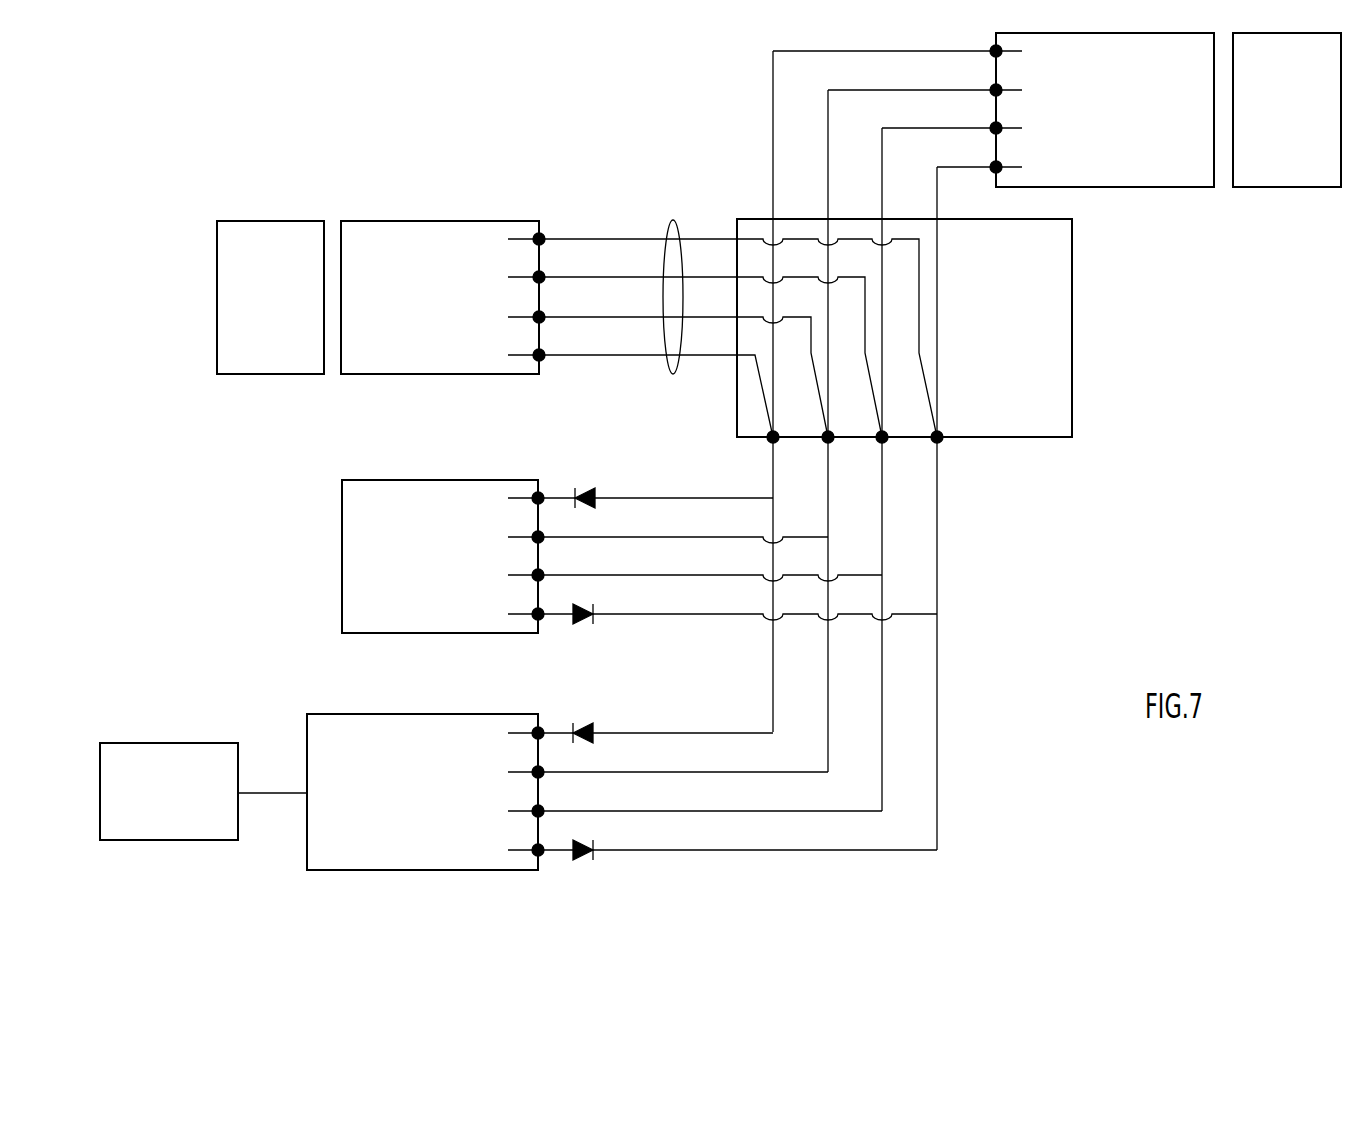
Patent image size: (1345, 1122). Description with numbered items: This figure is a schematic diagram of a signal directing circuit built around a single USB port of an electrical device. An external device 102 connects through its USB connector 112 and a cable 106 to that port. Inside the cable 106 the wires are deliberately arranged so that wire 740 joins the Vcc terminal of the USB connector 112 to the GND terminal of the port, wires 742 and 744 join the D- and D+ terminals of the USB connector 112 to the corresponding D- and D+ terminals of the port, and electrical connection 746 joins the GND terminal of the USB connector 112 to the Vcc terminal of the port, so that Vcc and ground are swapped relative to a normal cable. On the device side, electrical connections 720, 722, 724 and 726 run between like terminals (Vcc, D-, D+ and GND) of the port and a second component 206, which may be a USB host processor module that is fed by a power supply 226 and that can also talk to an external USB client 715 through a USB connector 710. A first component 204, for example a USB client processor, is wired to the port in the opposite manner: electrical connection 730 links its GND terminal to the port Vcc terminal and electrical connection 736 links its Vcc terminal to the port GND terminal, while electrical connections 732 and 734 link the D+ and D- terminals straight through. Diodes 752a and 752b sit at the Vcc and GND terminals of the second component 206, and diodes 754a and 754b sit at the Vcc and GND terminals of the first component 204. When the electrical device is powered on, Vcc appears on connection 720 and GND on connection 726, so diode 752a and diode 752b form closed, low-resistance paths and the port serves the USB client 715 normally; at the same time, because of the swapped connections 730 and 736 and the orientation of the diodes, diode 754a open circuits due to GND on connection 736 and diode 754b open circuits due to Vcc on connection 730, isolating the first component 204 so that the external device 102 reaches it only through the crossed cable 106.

The external device 102 is at (295, 376).
The USB connector 112 is at (435, 376).
The electrical connection 746 is at (568, 239).
The wire 742 is at (568, 277).
The wire 744 is at (568, 317).
The wire 740 is at (568, 355).
The cable 106 is at (666, 362).
The electrical connection 726 is at (773, 484).
The electrical connection 724 is at (828, 484).
The electrical connection 722 is at (882, 484).
The electrical connection 720 is at (937, 484).
The USB connector 710 is at (1180, 190).
The USB client 715 is at (1313, 190).
The first component 204 is at (435, 636).
The electrical connection 736 is at (648, 497).
The electrical connection 732 is at (648, 536).
The electrical connection 734 is at (648, 574).
The electrical connection 730 is at (648, 613).
The diode 754a is at (580, 487).
The diode 754b is at (585, 625).
The second component 206 is at (435, 872).
The diode 752a is at (586, 862).
The diode 752b is at (583, 723).
The power supply 226 is at (168, 745).